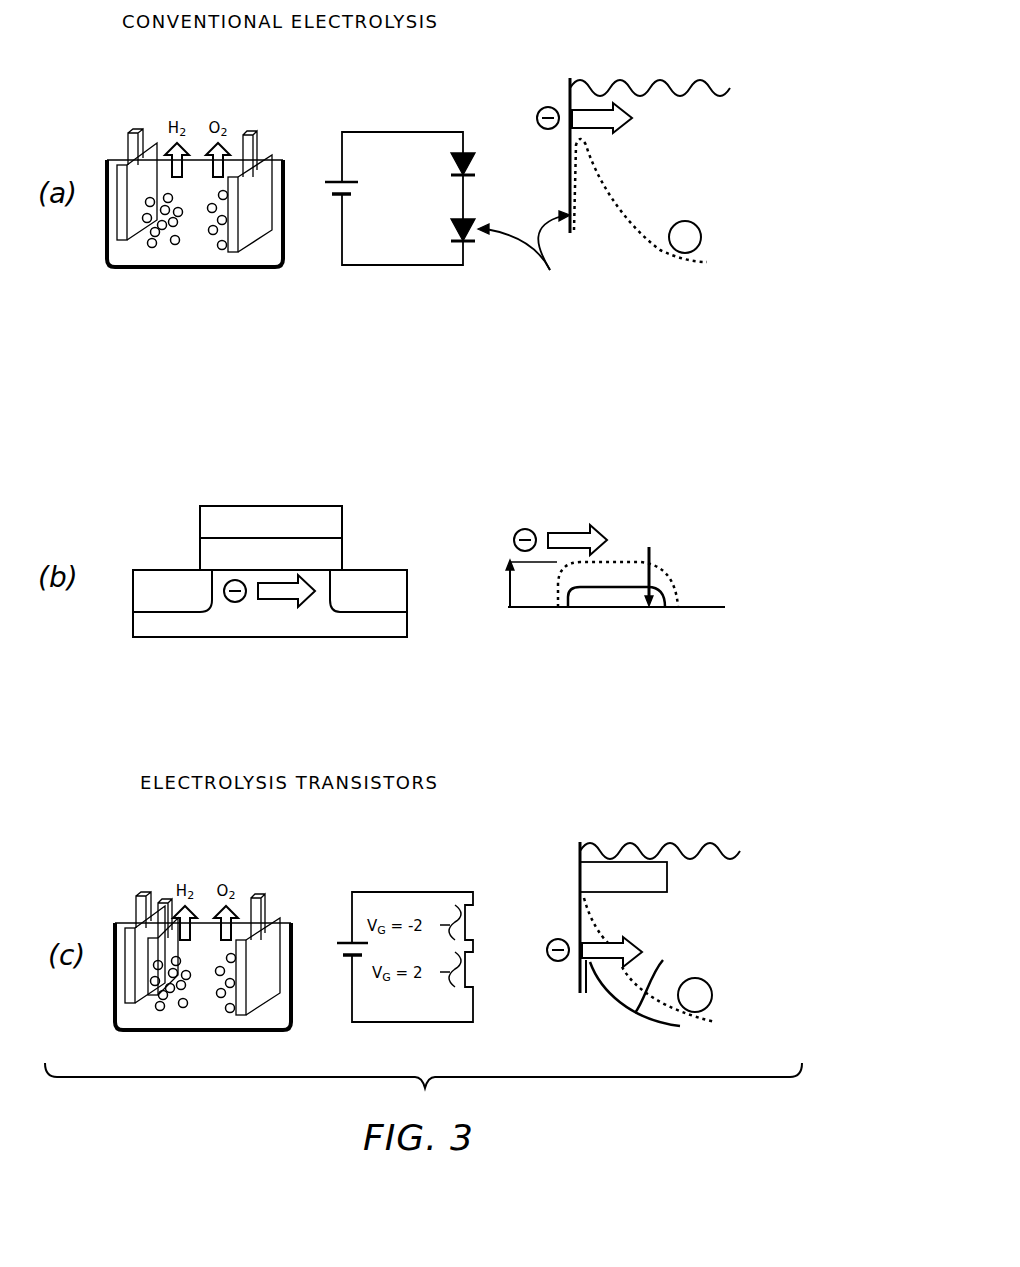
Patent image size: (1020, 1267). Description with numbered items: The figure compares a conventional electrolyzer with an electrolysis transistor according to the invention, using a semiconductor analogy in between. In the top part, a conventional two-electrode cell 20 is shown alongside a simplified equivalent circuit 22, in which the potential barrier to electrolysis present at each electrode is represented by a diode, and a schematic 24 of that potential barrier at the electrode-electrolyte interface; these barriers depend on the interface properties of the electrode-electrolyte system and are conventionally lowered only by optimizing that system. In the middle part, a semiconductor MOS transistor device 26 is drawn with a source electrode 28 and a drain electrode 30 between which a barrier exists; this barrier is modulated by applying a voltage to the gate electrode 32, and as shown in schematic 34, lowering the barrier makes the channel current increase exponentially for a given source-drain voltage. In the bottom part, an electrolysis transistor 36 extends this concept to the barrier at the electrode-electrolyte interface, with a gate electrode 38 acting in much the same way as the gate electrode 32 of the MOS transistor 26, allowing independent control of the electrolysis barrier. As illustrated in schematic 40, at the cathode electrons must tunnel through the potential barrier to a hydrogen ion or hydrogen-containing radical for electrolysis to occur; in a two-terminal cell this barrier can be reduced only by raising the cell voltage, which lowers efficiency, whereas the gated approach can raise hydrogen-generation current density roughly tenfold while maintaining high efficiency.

The conventional 2-electrode cell 20 is at (148, 79).
The simplified equivalent circuit 22 is at (405, 138).
The schematic of the potential barrier 24 is at (693, 98).
The semiconductor MOS transistor device 26 is at (268, 531).
The source electrode 28 is at (153, 540).
The drain electrode 30 is at (387, 540).
The gate electrode 32 is at (197, 515).
The schematic of barrier lowering 34 is at (702, 537).
The electrolysis transistor 36 is at (184, 911).
The gate electrode 38 is at (140, 931).
The schematic of cathode tunneling 40 is at (687, 915).